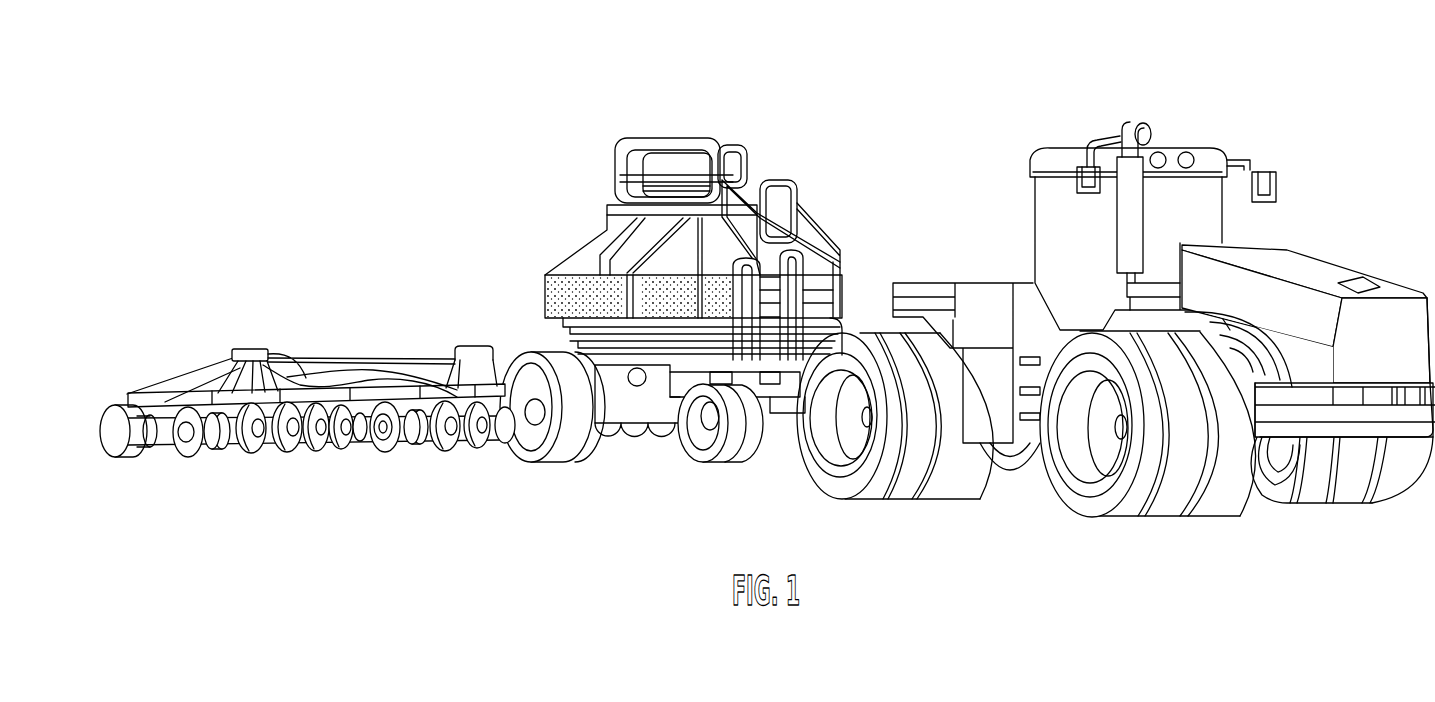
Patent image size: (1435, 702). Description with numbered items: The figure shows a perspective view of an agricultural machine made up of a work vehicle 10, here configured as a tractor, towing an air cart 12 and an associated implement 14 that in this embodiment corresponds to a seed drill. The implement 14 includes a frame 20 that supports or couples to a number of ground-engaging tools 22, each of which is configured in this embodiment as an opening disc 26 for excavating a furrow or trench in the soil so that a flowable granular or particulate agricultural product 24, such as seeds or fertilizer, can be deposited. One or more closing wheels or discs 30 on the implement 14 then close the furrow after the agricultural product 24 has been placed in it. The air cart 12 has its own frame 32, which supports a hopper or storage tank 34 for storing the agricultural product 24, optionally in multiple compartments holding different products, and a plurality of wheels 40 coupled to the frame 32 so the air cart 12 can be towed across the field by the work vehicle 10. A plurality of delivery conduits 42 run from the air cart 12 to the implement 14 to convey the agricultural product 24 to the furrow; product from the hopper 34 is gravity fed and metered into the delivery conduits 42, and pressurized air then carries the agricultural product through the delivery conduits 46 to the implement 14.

The work vehicle 10 is at (1283, 117).
The air cart 12 is at (671, 277).
The implement 14 is at (307, 345).
The frame 20 is at (373, 393).
The ground-engaging tools 22 is at (344, 484).
The agricultural product 24 is at (572, 280).
The opening disc 26 is at (250, 455).
The closing wheels or discs 30 is at (137, 458).
The frame 32 is at (700, 383).
The hopper or storage tank 34 is at (600, 240).
The wheels 40 is at (570, 460).
The delivery conduits 42 is at (196, 308).
The delivery conduits 46 is at (167, 388).